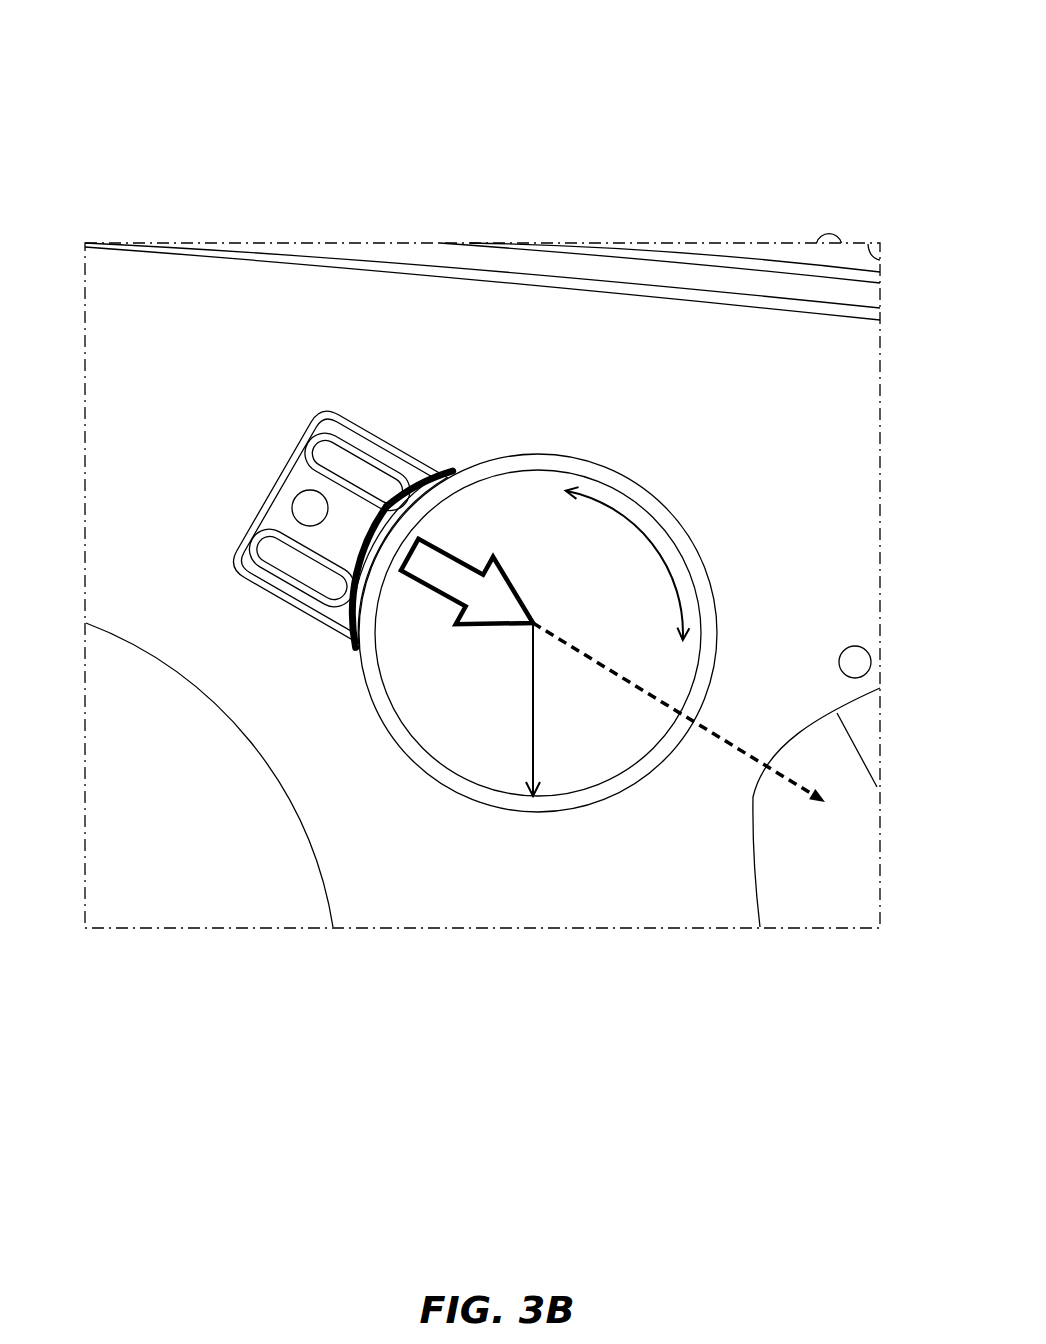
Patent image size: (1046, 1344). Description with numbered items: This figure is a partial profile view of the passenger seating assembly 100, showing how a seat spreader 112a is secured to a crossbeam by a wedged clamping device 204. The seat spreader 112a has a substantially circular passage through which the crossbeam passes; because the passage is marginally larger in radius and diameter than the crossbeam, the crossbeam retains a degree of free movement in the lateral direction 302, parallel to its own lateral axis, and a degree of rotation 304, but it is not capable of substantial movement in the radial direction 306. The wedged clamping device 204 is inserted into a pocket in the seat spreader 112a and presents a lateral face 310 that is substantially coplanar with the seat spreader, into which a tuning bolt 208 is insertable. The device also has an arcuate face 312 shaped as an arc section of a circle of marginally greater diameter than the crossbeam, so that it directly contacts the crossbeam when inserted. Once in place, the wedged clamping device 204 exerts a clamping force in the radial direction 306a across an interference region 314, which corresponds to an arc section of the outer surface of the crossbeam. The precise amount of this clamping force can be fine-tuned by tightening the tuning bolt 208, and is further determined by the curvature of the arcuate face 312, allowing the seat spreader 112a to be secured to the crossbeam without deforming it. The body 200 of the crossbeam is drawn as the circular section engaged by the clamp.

The passenger seating assembly 100 is at (76, 85).
The seat spreader 112a is at (660, 335).
The disc 200 is at (577, 713).
The wedged clamping device 204 is at (288, 468).
The tuning bolt 208 is at (310, 510).
The lateral direction 302 is at (722, 739).
The rotation 304 is at (662, 553).
The radial direction 306 is at (533, 747).
The radial direction of clamping force 306a is at (471, 589).
The lateral face 310 is at (273, 518).
The arcuate face 312 is at (420, 492).
The interference region 314 is at (361, 645).